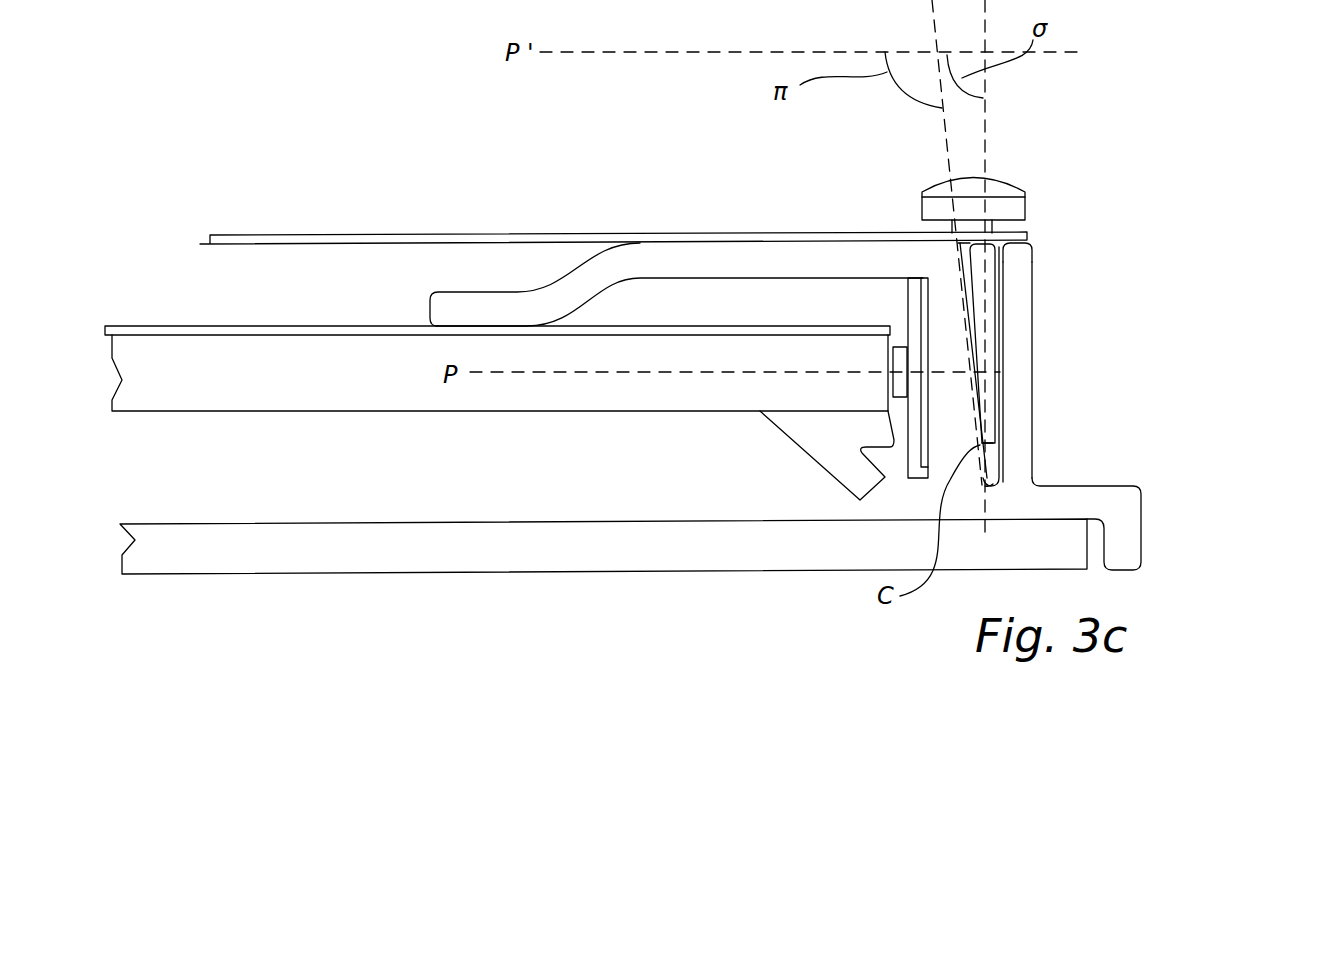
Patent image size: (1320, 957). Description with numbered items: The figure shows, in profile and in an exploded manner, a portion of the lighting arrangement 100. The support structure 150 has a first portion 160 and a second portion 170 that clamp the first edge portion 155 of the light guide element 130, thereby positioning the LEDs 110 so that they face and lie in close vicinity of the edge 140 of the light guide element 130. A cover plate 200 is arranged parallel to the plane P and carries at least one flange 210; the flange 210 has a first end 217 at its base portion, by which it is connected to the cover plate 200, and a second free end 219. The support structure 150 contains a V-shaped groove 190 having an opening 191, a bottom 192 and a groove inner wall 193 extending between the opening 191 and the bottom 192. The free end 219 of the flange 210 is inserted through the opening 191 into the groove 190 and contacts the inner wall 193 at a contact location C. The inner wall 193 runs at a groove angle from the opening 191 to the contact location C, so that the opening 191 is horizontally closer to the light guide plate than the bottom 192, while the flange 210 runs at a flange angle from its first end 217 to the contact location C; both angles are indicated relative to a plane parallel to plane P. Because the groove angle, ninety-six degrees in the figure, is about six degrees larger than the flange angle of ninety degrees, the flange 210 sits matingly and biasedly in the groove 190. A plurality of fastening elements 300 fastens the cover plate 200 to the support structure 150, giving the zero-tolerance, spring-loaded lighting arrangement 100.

The lighting arrangement 100 is at (1085, 272).
The LEDs 110 is at (900, 372).
The light guide element 130 is at (622, 418).
The edge 140 is at (885, 357).
The support structure 150 is at (1150, 513).
The first edge portion 155 is at (773, 367).
The first portion 160 is at (691, 252).
The second portion 170 is at (801, 427).
The groove 190 is at (957, 255).
The opening 191 is at (960, 300).
The bottom 192 is at (1003, 470).
The groove inner wall 193 is at (975, 383).
The cover plate 200 is at (589, 234).
The flange 210 is at (990, 326).
The first end 217 is at (999, 242).
The second free end 219 is at (993, 442).
The fastening elements 300 is at (1028, 196).